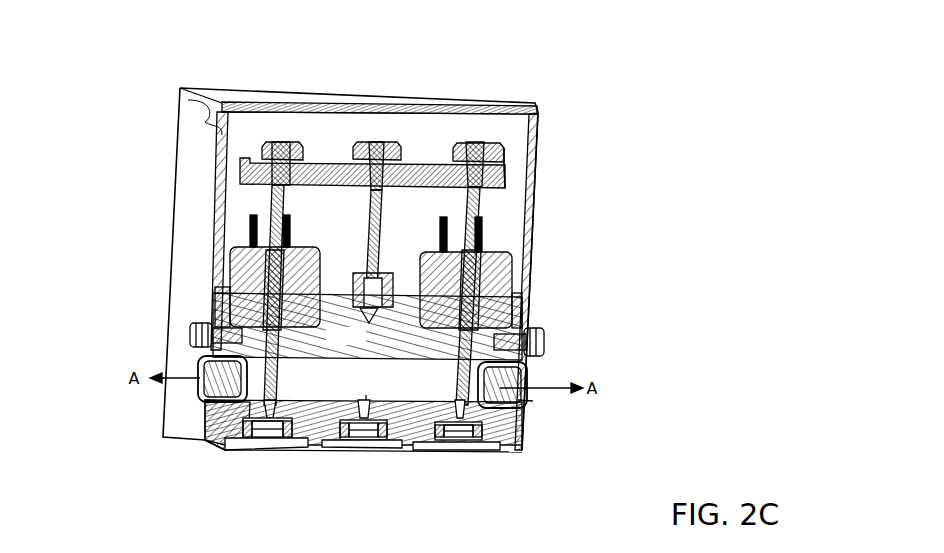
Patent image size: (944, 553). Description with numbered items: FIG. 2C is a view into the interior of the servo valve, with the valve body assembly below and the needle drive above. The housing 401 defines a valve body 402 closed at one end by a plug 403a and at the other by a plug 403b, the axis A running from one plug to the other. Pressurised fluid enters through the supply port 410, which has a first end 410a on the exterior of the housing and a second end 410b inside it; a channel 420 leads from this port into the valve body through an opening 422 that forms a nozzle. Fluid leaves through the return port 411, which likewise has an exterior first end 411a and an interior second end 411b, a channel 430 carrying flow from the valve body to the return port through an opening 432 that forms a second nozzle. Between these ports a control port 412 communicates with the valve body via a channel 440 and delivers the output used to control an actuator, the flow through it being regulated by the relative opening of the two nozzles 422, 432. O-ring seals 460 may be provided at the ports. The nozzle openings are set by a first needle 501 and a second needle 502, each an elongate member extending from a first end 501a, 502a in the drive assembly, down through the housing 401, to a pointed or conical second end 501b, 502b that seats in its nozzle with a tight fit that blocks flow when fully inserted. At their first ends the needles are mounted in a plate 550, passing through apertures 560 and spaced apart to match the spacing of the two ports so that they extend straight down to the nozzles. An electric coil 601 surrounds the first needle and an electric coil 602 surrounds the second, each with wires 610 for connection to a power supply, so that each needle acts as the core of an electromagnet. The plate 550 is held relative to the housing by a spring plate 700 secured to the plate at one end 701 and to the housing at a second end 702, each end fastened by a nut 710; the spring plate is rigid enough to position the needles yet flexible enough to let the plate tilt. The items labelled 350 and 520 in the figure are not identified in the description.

The housing top 350 is at (460, 97).
The apertures 560 is at (222, 104).
The first end of second needle 502a is at (487, 137).
The first end of first needle 501a is at (283, 142).
The first end of spring plate 701 is at (376, 142).
The mounting plate 520 is at (300, 153).
The nut 710 is at (398, 148).
The plate 550 is at (503, 178).
The first needle 501 is at (275, 198).
The second needle 502 is at (507, 210).
The spring plate 700 is at (378, 225).
The wires 610 is at (250, 222).
The electric coil 602 is at (513, 287).
The electric coil 601 is at (218, 313).
The second end of spring plate 702 is at (367, 326).
The valve body 402 is at (492, 380).
The opening 422 is at (275, 398).
The channel 420 is at (366, 402).
The channel 440 is at (375, 395).
The plug 403b is at (527, 403).
The plug 403a is at (200, 380).
The second end of second needle 502b is at (530, 408).
The opening 432 is at (520, 420).
The second end of supply port 410b is at (253, 420).
The second end of first needle 501b is at (207, 418).
The channel 430 is at (437, 423).
The housing 401 is at (530, 440).
The second end of return port 411b is at (517, 430).
The first end of supply port 410a is at (292, 448).
The control port 412 is at (366, 457).
The O-ring seals 460 is at (383, 450).
The supply port 410 is at (265, 453).
The first end of return port 411a is at (488, 450).
The return port 411 is at (462, 463).